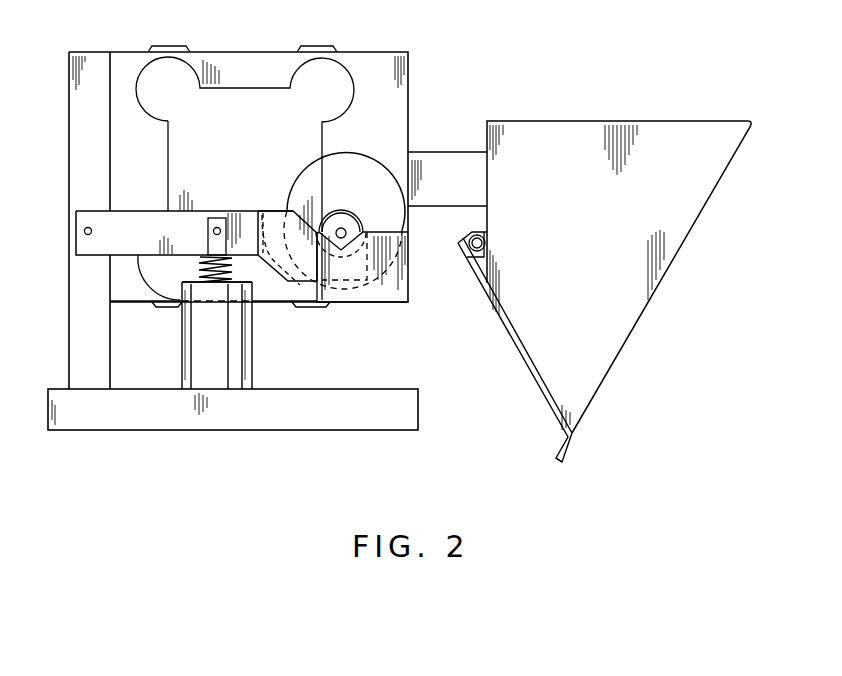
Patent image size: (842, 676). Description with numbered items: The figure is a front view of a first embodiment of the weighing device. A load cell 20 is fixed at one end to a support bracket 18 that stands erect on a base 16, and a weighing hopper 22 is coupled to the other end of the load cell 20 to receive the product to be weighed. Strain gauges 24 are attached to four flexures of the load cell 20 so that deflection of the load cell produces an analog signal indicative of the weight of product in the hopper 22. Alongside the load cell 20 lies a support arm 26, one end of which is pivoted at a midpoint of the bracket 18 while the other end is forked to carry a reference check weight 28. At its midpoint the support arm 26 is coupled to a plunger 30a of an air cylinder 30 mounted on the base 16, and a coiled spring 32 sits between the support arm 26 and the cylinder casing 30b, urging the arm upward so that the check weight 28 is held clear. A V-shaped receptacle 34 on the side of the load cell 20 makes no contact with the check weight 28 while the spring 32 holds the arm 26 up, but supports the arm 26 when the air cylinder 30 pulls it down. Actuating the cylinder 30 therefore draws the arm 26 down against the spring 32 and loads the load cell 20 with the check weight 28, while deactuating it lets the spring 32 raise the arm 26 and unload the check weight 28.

The base 16 is at (258, 431).
The support bracket 18 is at (69, 154).
The load cell 20 is at (387, 42).
The weighing hopper 22 is at (615, 121).
The strain gauges 24 is at (190, 46).
The support arm 26 is at (196, 211).
The reference check weight 28 is at (356, 183).
The air cylinder 30 is at (178, 351).
The plunger 30a is at (222, 218).
The cylinder casing 30b is at (247, 360).
The coiled spring 32 is at (198, 270).
The V-shaped receptacle 34 is at (386, 304).